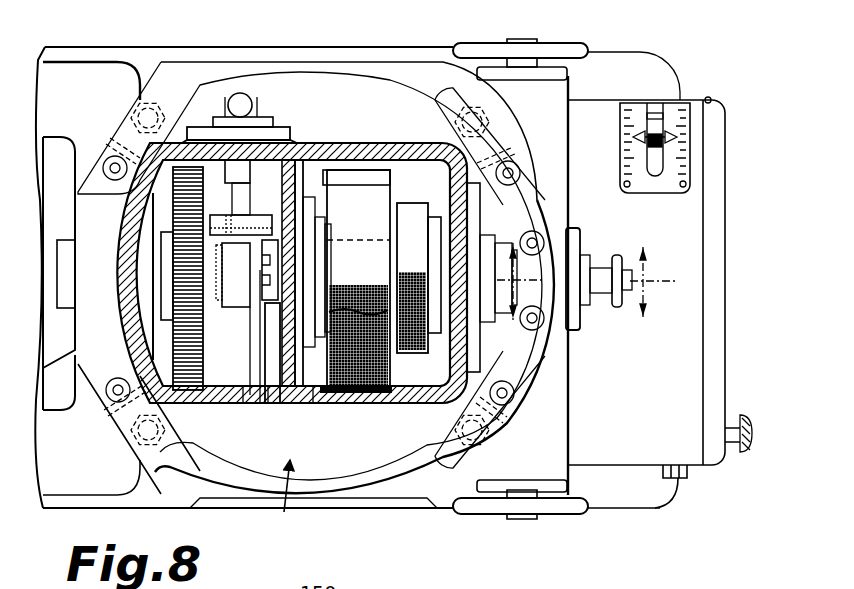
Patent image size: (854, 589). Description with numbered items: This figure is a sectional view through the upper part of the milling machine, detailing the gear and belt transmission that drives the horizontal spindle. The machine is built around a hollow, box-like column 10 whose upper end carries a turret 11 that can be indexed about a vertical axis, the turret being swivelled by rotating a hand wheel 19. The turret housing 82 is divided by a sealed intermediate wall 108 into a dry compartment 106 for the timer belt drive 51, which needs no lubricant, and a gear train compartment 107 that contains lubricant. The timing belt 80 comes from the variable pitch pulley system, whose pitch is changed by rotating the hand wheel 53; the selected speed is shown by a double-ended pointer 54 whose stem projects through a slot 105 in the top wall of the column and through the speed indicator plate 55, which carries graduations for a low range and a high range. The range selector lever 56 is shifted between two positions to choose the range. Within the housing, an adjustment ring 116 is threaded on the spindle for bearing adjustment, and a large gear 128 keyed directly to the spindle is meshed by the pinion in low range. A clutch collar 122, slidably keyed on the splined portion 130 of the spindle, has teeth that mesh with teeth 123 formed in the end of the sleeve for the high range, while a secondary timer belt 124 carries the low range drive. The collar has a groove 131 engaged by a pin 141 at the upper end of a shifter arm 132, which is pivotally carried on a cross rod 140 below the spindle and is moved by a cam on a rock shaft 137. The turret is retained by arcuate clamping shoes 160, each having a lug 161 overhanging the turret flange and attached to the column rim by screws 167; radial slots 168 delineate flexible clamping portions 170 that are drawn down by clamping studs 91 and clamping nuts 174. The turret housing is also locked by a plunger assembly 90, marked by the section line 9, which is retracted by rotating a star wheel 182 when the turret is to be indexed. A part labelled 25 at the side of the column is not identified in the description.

The column 10 is at (657, 508).
The turret 11 is at (284, 500).
The hand wheel 19 is at (576, 514).
The side block 25 is at (47, 192).
The timer belt drive 51 is at (398, 168).
The hand wheel 53 is at (582, 44).
The pointer 54 is at (690, 127).
The speed indicator plate 55 is at (690, 172).
The range selector lever 56 is at (250, 103).
The timing belt 80 is at (413, 205).
The turret housing 82 is at (340, 150).
The plunger assembly 90 is at (586, 318).
The clamping studs 91 is at (168, 108).
The slot 105 is at (660, 192).
The dry compartment 106 is at (320, 140).
The gear train compartment 107 is at (243, 404).
The intermediate wall 108 is at (313, 404).
The adjustment ring 116 is at (160, 300).
The clutch collar 122 is at (262, 300).
The teeth 123 is at (306, 268).
The secondary timer belt 124 is at (393, 382).
The large gear 128 is at (182, 262).
The splined portion 130 is at (258, 332).
The groove 131 is at (265, 358).
The shifter arm 132 is at (312, 208).
The rock shaft 137 is at (272, 212).
The cross rod 140 is at (272, 405).
The pin 141 is at (233, 275).
The arcuate clamping shoes 160 is at (95, 178).
The lug 161 is at (432, 430).
The screws 167 is at (113, 181).
The radial slots 168 is at (517, 146).
The clamping portion 170 is at (154, 100).
The clamping nuts 174 is at (145, 106).
The star wheel 182 is at (614, 256).
The section line 9- 9 is at (571, 277).